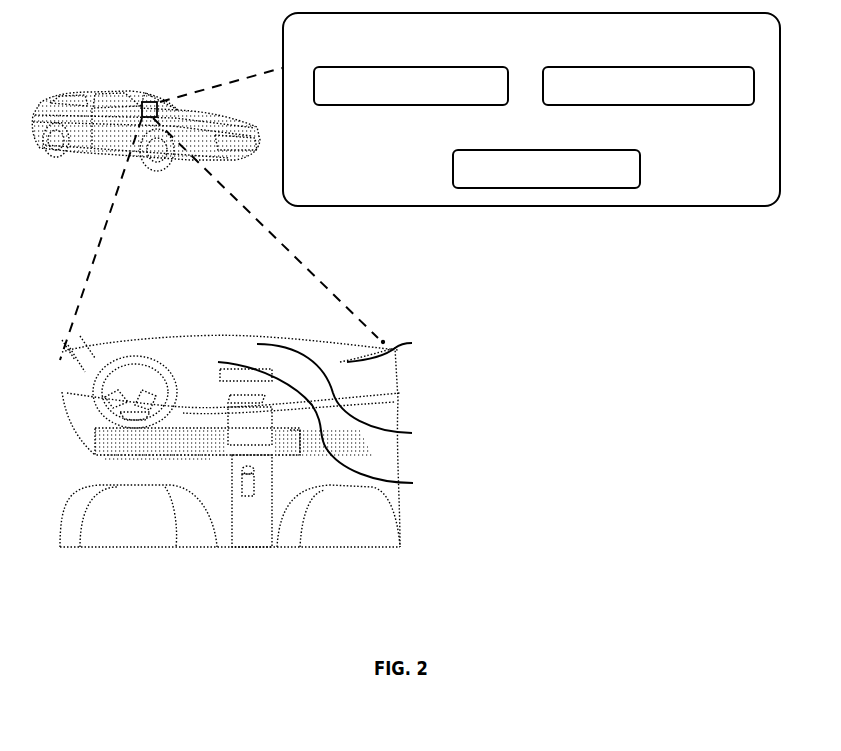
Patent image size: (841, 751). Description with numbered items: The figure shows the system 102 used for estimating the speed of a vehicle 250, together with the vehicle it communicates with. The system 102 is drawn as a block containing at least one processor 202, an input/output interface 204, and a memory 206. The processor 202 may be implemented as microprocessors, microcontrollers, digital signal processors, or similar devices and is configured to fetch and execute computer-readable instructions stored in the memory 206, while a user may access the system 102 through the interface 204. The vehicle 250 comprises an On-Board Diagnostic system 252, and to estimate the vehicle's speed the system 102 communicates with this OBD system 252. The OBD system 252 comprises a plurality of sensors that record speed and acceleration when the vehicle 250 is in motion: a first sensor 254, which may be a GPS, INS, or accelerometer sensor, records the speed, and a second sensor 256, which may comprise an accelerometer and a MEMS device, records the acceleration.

The system 102 is at (583, 42).
The processor 202 is at (493, 91).
The input/output (I/O) interface 204 is at (723, 91).
The memory 206 is at (602, 171).
The vehicle 250 is at (114, 91).
The On-Board Diagnostic (OBD) system 252 is at (411, 348).
The first sensor 254 is at (366, 388).
The second sensor 256 is at (347, 427).